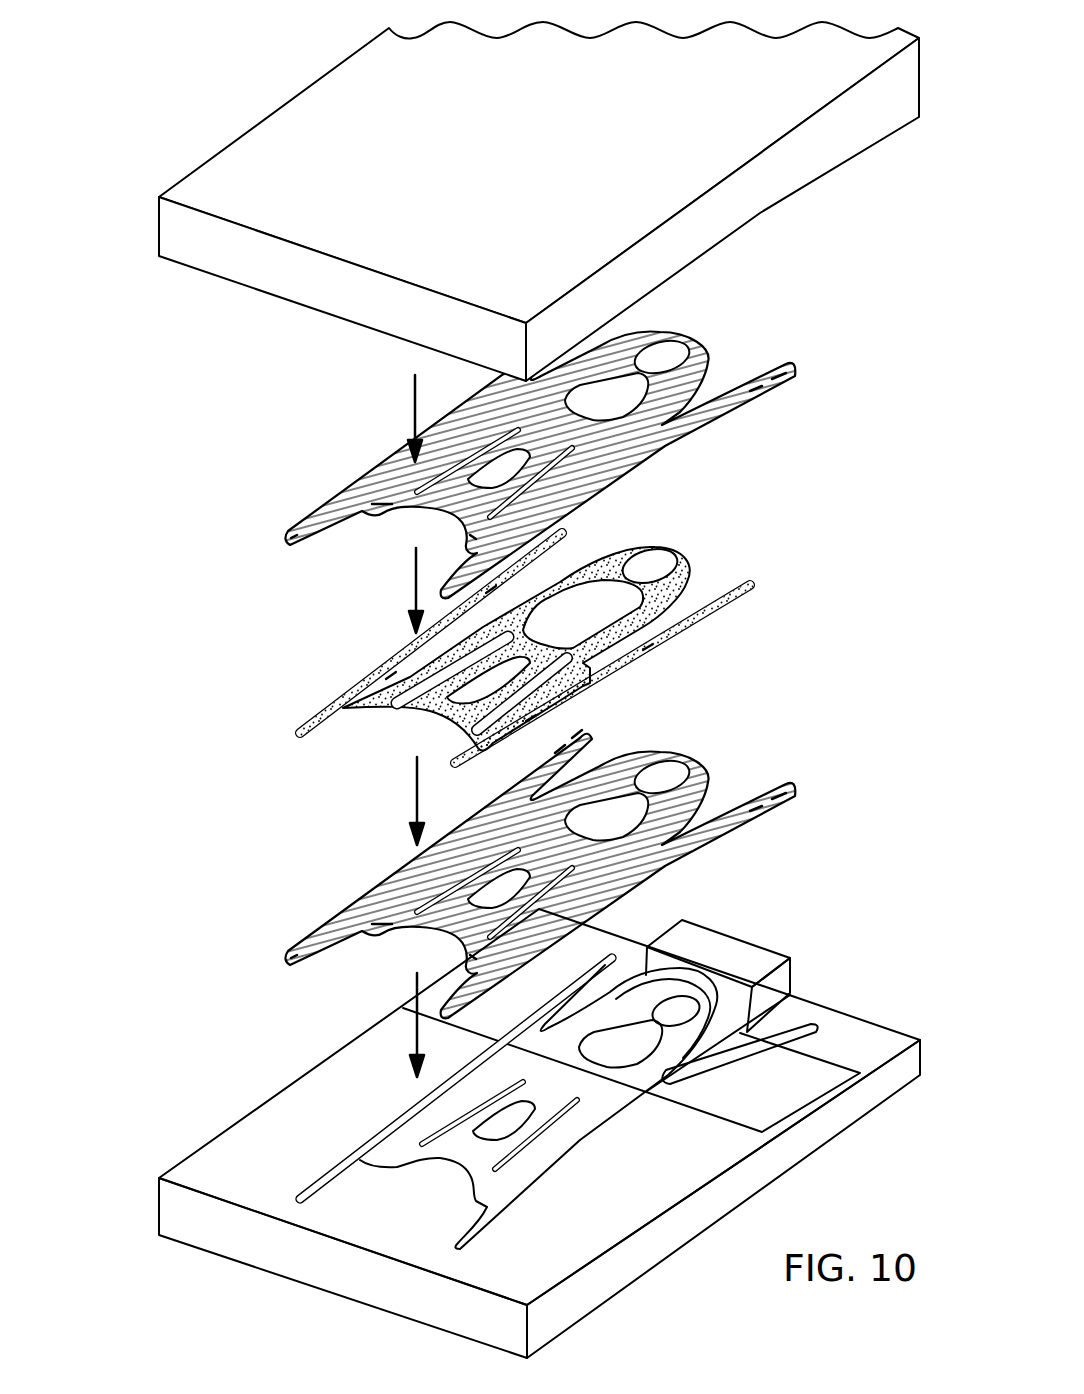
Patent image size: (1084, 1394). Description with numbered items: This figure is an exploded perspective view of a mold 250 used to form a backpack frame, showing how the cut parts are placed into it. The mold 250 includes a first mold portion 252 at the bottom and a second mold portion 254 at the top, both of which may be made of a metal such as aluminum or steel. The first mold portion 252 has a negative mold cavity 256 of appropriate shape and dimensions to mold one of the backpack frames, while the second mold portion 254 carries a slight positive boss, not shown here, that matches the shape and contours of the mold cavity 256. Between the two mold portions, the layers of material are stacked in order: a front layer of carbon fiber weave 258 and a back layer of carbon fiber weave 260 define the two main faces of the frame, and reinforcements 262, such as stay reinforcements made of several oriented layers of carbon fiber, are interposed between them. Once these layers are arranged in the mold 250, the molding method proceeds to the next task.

The mold 250 is at (148, 92).
The first mold portion 252 is at (217, 1155).
The second mold portion 254 is at (288, 120).
The mold cavity 256 is at (640, 1077).
The front layer of carbon fiber weave 258 is at (375, 490).
The back layer of carbon fiber weave 260 is at (375, 910).
The reinforcements 262 is at (280, 635).